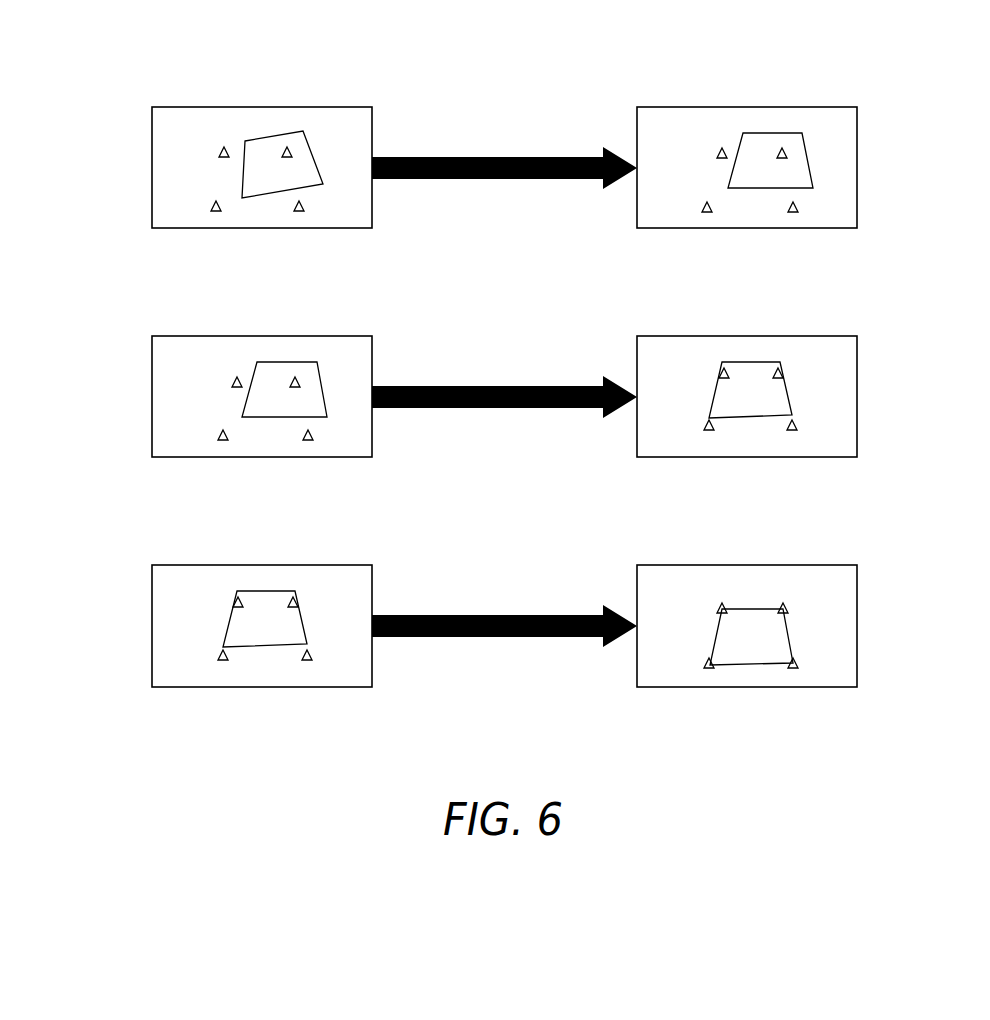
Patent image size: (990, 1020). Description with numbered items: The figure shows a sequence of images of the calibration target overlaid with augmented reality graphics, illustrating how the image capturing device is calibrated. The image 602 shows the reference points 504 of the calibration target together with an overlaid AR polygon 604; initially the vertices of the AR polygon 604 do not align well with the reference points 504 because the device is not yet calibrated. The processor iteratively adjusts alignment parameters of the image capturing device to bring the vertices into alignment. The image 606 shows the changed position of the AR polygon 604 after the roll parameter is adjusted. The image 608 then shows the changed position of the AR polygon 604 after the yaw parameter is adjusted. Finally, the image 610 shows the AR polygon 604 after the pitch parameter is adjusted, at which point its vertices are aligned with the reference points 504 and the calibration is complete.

The reference points 504 is at (219, 152).
The image 602 is at (223, 149).
The AR polygon 604 is at (281, 136).
The image 606 is at (857, 167).
The image 608 is at (857, 396).
The image 610 is at (857, 624).